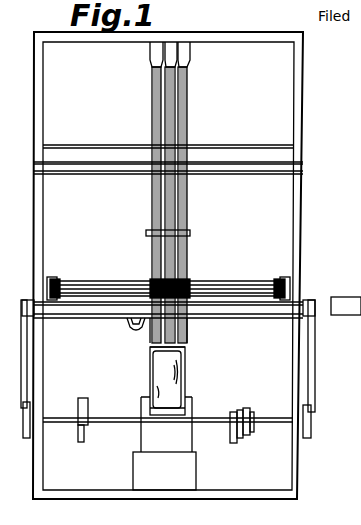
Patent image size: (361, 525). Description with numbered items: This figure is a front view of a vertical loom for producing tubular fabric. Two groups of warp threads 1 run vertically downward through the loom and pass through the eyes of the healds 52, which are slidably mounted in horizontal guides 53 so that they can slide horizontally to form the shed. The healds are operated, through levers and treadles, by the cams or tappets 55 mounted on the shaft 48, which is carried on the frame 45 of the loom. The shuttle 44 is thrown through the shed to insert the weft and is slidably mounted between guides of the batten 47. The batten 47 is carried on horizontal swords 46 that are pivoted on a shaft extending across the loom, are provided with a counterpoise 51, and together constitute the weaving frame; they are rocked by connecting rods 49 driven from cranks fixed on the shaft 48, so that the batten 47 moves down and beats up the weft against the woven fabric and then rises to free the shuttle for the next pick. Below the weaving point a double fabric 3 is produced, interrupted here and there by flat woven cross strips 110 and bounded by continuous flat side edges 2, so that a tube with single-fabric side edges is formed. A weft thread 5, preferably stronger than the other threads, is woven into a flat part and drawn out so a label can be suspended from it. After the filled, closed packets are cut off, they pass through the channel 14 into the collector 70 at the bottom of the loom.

The warp threads 1 is at (186, 218).
The flat edges 2 is at (150, 370).
The double fabric 3 is at (176, 384).
The weft thread 5 is at (148, 336).
The channel 14 is at (190, 447).
The shuttle 44 is at (128, 324).
The frame 45 is at (298, 222).
The swords 46 is at (307, 301).
The batten 47 is at (281, 318).
The shaft 48 is at (123, 422).
The connecting rods 49 is at (22, 372).
The counterpoise 51 is at (346, 316).
The healds 52 is at (62, 283).
The horizontal guides 53 is at (50, 277).
The cams or tappets 55 is at (84, 398).
The collector 70 is at (196, 474).
The flat woven cross strips 110 is at (183, 347).